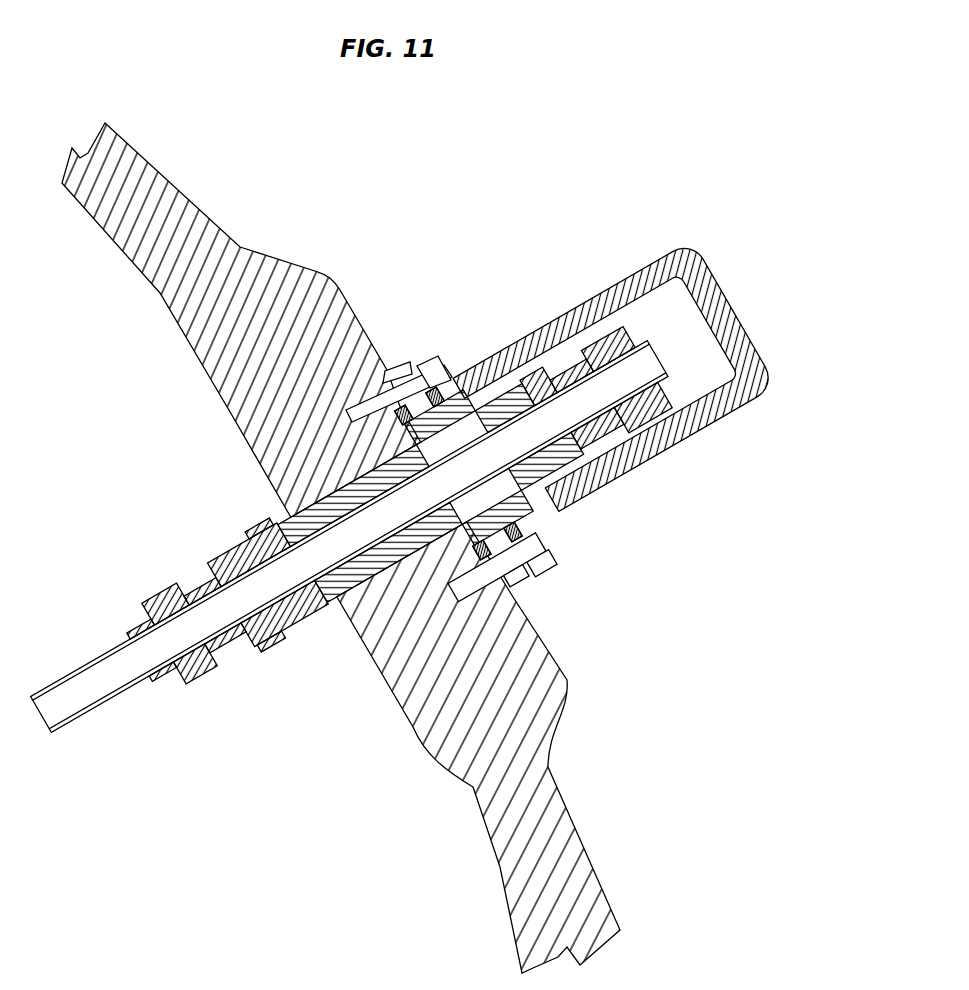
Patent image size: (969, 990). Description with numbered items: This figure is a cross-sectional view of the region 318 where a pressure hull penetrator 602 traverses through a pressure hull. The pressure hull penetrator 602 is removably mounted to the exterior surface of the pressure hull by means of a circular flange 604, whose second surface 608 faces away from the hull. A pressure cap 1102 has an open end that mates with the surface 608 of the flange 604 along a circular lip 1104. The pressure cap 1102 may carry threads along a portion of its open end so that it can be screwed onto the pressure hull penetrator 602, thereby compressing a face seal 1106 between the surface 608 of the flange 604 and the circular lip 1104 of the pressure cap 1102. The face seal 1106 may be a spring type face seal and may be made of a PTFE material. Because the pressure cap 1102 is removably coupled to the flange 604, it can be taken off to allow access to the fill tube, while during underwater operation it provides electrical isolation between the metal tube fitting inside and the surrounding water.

The probe assembly 318 is at (556, 123).
The housing 1102 is at (635, 270).
The probe tube 602 is at (495, 385).
The mounting nut 604 is at (393, 368).
The seal 608 is at (446, 393).
The insulating ring 1104 is at (452, 400).
The gasket 1106 is at (397, 427).